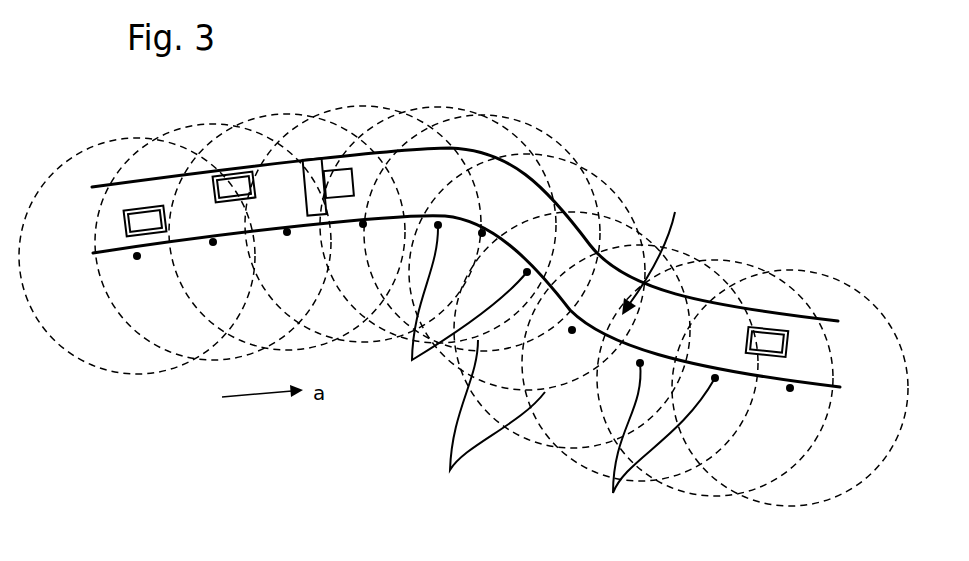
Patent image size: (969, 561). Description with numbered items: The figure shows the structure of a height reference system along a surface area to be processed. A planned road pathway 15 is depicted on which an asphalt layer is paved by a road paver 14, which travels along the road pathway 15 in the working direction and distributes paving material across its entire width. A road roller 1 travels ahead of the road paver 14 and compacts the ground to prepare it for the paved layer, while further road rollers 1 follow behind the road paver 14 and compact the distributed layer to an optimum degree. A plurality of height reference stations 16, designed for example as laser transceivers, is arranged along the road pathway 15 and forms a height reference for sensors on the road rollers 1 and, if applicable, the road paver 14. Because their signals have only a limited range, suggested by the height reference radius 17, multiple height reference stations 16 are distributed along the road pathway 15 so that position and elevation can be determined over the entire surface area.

The road roller 1 is at (145, 215).
The road paver 14 is at (337, 178).
The road pathway 15 is at (655, 249).
The height reference station 16 is at (554, 375).
The height reference radius 17 is at (488, 420).